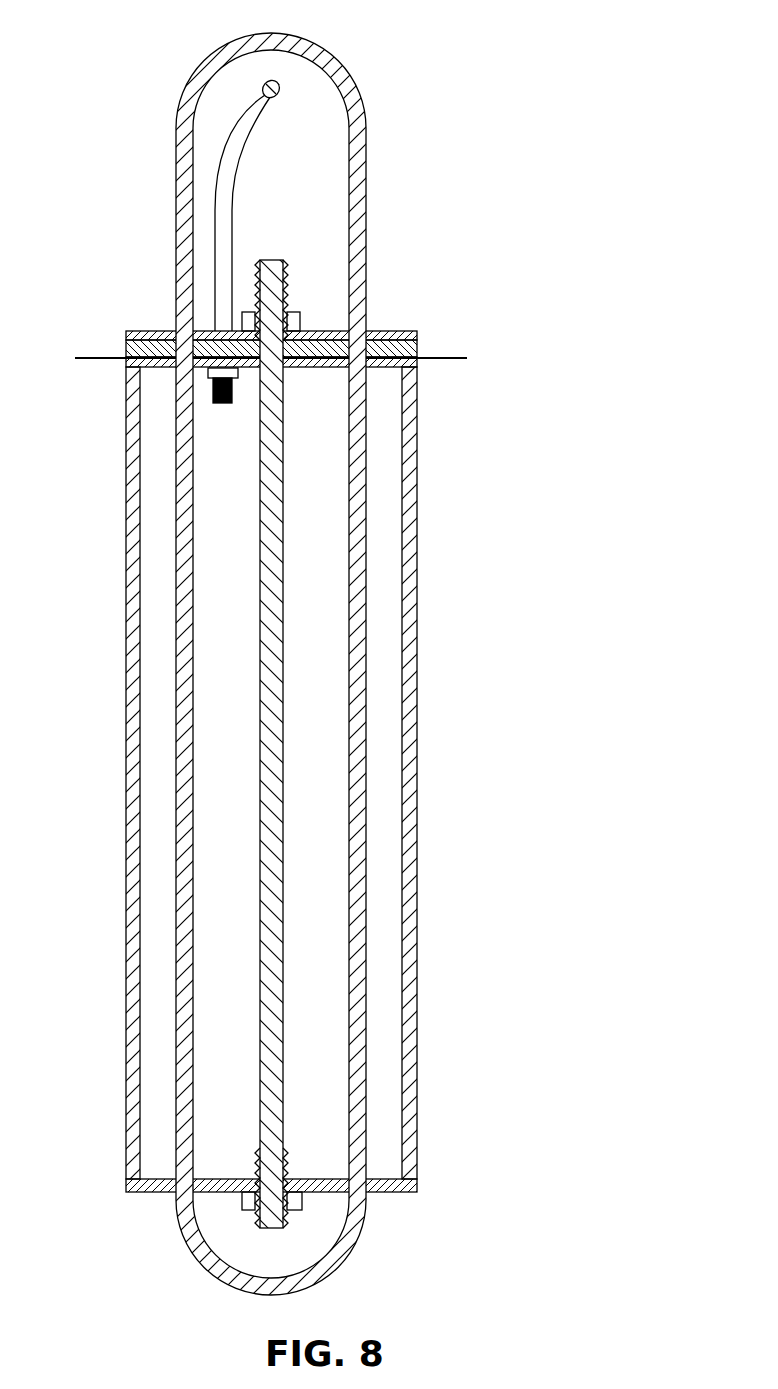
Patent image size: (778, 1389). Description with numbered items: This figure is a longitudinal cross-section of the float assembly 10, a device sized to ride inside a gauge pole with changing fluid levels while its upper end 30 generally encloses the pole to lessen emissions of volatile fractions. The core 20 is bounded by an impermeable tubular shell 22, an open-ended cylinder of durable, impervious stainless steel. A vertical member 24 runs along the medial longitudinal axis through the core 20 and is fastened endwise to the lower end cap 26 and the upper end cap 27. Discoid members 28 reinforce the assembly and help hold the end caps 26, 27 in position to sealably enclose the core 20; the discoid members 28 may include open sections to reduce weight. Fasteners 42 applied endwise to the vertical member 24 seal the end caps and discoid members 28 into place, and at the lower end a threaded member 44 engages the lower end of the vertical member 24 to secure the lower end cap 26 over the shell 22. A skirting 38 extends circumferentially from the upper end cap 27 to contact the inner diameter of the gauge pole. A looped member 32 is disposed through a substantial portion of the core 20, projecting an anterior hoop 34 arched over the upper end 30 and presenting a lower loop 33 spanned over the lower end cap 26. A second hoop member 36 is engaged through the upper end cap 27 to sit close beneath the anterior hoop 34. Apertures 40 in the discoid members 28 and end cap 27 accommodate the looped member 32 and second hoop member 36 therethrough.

The float assembly 10 is at (553, 177).
The core 20 is at (307, 773).
The tubular shell 22 is at (418, 637).
The vertical member 24 is at (270, 785).
The lower end cap 26 is at (417, 1180).
The upper end cap 27 is at (272, 348).
The discoid members 28 is at (132, 333).
The upper end 30 is at (588, 337).
The looped member 32 is at (286, 656).
The lower loop 33 is at (200, 1280).
The anterior hoop 34 is at (274, 36).
The second hoop member 36 is at (230, 122).
The skirting 38 is at (88, 357).
The apertures 40 is at (168, 316).
The fasteners 42 is at (300, 320).
The threaded member 44 is at (300, 1200).